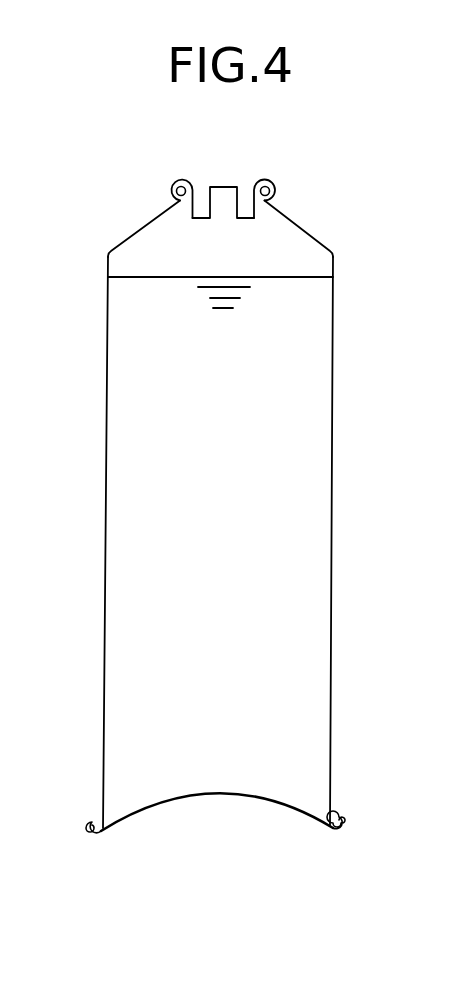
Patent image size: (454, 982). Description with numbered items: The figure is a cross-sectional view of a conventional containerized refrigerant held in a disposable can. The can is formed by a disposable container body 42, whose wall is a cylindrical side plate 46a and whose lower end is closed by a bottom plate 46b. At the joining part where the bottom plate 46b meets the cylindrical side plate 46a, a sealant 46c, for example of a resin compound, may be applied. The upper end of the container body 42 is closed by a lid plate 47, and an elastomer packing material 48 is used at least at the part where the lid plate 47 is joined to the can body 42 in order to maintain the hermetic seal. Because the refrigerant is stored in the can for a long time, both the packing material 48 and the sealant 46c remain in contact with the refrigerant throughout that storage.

The disposable container body 42 is at (107, 415).
The cylindrical side plate 46a is at (333, 615).
The bottom plate 46b is at (217, 797).
The sealant 46c is at (337, 818).
The lid plate 47 is at (218, 187).
The elastomer packing material 48 is at (281, 207).